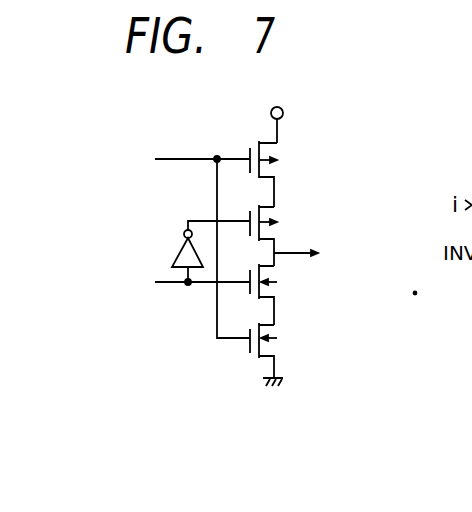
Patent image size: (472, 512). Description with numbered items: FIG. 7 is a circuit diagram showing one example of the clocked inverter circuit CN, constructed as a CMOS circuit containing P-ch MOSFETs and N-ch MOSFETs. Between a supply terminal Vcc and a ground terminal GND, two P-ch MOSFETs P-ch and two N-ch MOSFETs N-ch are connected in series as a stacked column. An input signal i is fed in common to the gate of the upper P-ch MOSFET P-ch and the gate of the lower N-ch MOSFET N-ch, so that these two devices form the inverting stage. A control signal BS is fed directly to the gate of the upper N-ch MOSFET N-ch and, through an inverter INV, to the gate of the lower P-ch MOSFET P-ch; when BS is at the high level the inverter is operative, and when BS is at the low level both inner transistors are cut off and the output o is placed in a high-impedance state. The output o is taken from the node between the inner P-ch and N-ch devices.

The supply voltage terminal Vcc is at (282, 110).
The P-ch MOSFET P-ch is at (283, 160).
The N-ch MOSFET N-ch is at (279, 283).
The ground terminal GND is at (298, 398).
The output terminal o is at (311, 253).
The input terminal i is at (147, 154).
The bus select / control input BS is at (147, 277).
The inverter INV is at (189, 251).